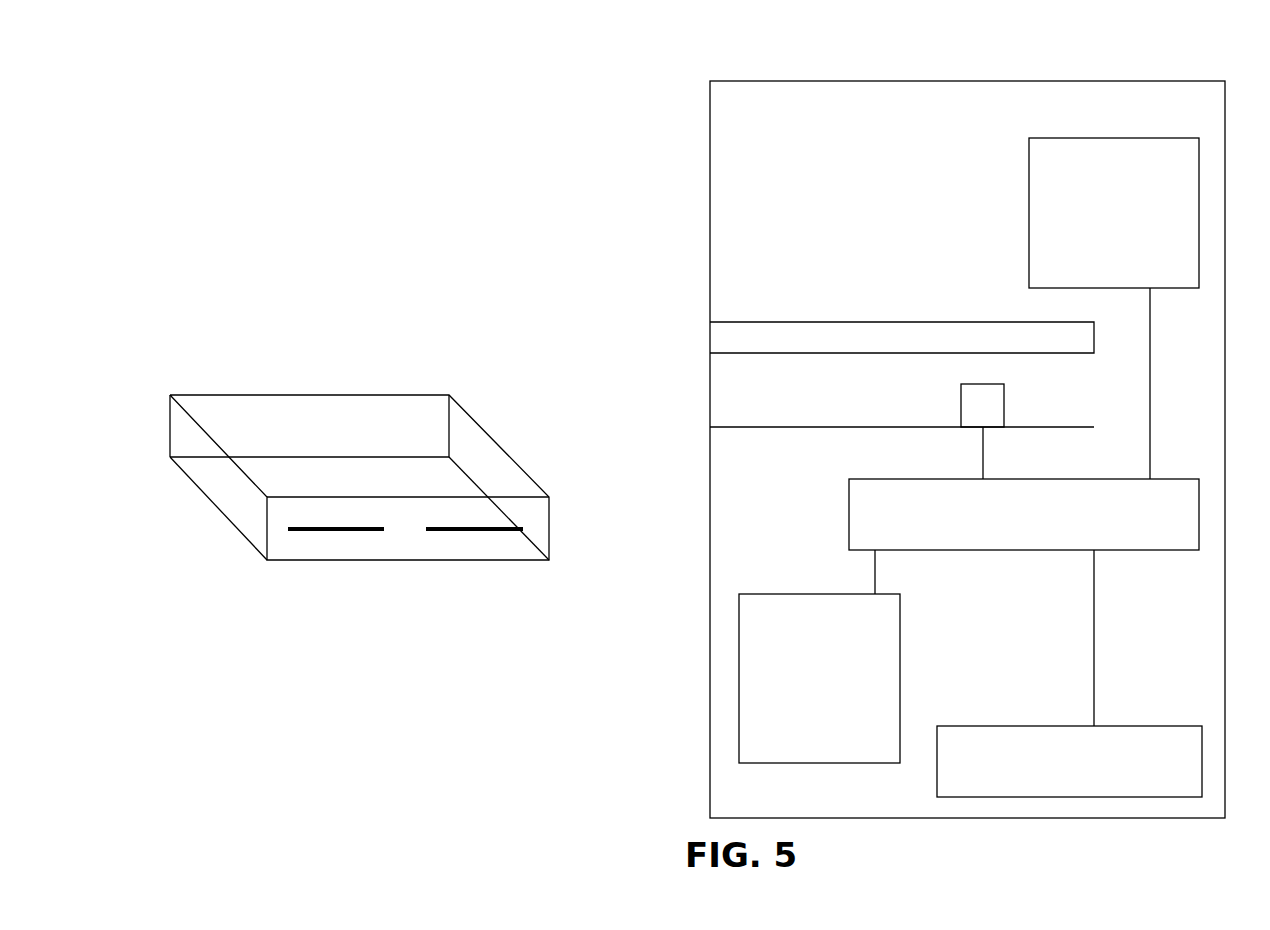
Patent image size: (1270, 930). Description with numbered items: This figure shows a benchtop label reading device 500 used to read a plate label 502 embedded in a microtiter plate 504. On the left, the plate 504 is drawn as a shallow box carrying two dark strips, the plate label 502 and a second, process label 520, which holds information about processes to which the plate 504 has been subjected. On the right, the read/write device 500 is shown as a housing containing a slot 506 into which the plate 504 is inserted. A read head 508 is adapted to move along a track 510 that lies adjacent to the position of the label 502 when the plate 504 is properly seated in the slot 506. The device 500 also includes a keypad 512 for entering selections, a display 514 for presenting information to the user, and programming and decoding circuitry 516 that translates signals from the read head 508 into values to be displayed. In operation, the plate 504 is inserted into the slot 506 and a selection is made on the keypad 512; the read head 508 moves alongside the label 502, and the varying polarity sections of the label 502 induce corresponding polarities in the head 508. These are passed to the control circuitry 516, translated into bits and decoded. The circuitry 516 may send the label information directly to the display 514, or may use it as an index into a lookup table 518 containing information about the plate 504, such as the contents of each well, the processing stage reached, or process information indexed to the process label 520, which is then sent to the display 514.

The label reading device 500 is at (650, 79).
The plate label 502 is at (480, 532).
The microtiter plate 504 is at (488, 433).
The slot 506 is at (777, 321).
The read head 508 is at (1005, 417).
The track 510 is at (769, 429).
The keypad 512 is at (787, 593).
The display 514 is at (993, 723).
The programming and decoding circuitry 516 is at (1125, 552).
The lookup table 518 is at (1085, 137).
The process label 520 is at (333, 532).